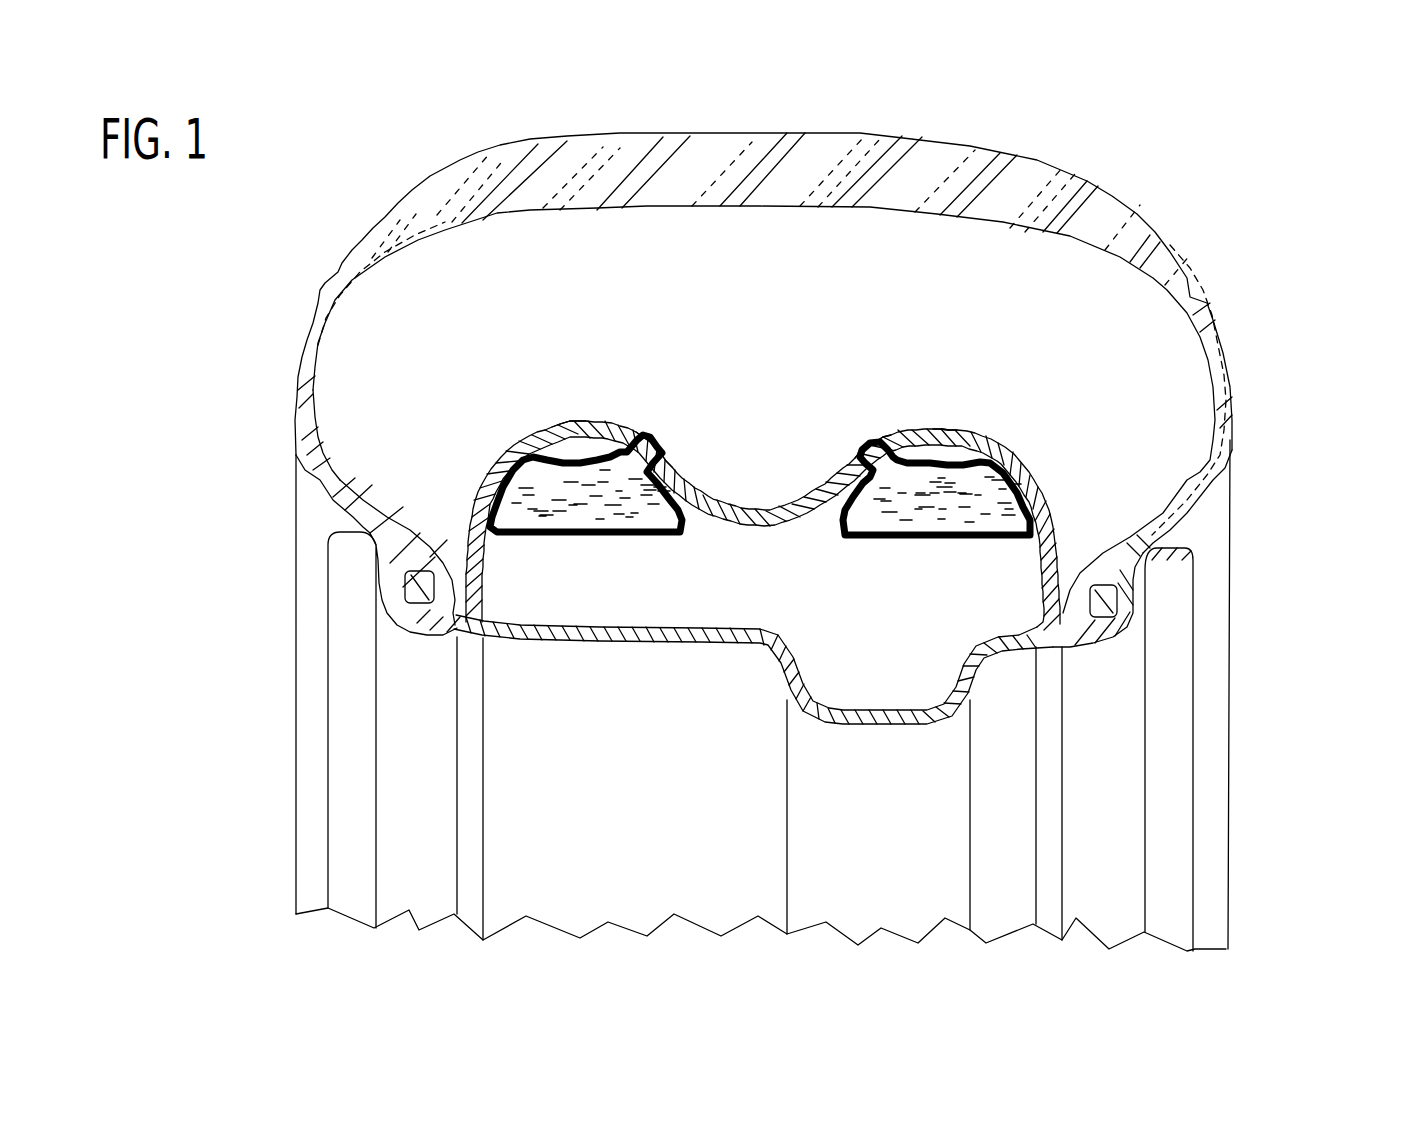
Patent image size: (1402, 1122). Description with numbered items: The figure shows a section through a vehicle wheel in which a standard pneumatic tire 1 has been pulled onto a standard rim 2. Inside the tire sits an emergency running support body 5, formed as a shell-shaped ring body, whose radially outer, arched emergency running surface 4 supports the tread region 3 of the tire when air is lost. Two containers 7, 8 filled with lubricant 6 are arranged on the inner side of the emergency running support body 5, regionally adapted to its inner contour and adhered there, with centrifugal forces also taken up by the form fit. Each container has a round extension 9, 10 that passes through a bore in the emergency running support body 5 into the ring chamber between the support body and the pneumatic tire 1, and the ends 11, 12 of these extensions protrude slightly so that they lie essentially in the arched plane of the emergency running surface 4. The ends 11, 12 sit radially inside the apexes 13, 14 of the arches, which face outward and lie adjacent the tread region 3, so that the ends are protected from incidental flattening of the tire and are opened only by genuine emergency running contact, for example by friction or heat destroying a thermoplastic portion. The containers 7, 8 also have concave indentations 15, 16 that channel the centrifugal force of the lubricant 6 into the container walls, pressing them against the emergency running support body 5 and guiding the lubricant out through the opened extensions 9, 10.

The pneumatic tire 1 is at (1200, 240).
The rim 2 is at (1122, 642).
The tread region 3 is at (917, 157).
The emergency running surface 4 is at (618, 400).
The emergency running support body 5 is at (1048, 482).
The lubricant 6 is at (580, 512).
The container 7 is at (510, 560).
The container 8 is at (1020, 570).
The extension 9 is at (681, 437).
The extension 10 is at (896, 405).
The end 11 is at (650, 437).
The end 12 is at (865, 415).
The apex 13 is at (574, 393).
The apex 14 is at (957, 412).
The concave indentation 15 is at (558, 440).
The concave indentation 16 is at (962, 432).